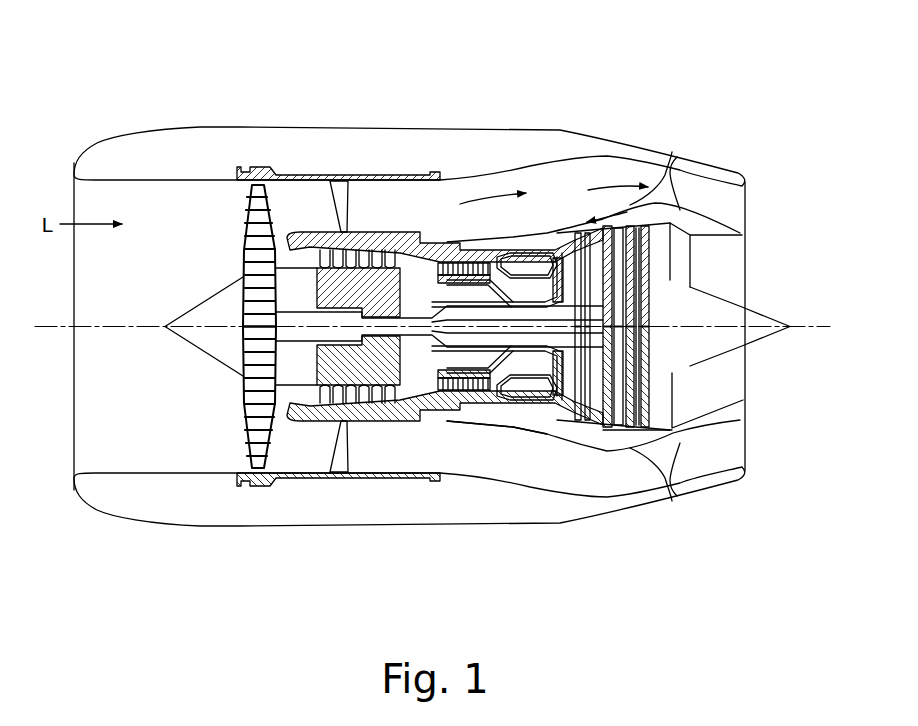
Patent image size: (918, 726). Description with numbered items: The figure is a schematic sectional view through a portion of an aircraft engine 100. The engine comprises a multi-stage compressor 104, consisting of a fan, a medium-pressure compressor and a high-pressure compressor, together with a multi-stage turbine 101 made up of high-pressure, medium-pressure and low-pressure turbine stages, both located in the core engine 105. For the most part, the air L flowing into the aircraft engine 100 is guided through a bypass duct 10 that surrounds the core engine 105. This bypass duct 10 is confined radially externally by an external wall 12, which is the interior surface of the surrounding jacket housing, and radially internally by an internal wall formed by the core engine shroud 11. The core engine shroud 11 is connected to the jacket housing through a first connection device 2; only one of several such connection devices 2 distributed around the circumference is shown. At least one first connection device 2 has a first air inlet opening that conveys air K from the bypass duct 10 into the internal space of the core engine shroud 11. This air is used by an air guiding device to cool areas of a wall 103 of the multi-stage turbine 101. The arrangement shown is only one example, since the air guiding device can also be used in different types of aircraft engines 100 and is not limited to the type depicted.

The aircraft engine 100 is at (457, 309).
The bypass duct 10 is at (384, 219).
The core engine shroud 11 is at (447, 236).
The external wall 12 is at (487, 173).
The first connection device 2 is at (677, 157).
The multi-stage turbine 101 is at (645, 258).
The wall of the multi-stage turbine 103 is at (703, 219).
The multi-stage compressor 104 is at (320, 410).
The core engine 105 is at (492, 437).